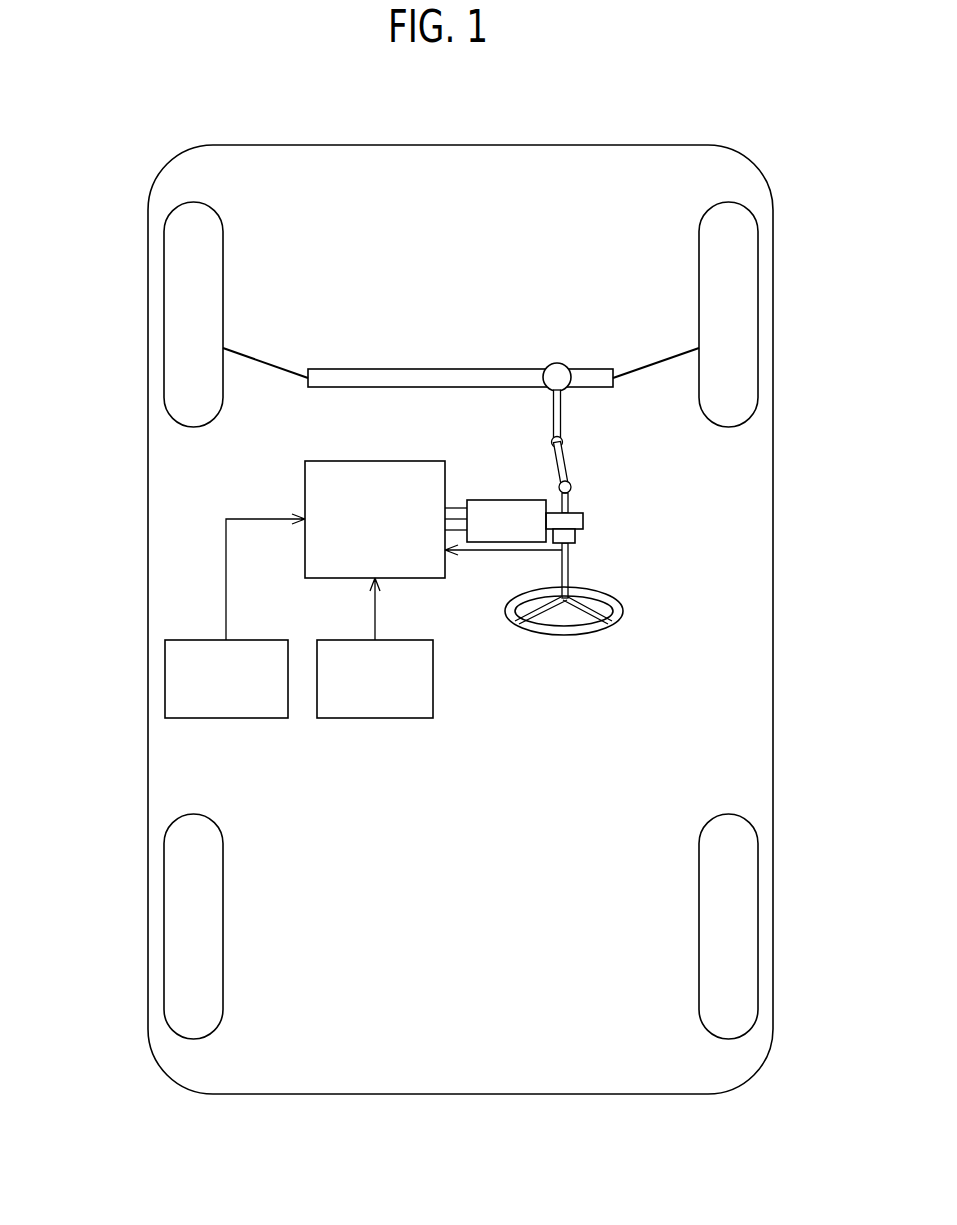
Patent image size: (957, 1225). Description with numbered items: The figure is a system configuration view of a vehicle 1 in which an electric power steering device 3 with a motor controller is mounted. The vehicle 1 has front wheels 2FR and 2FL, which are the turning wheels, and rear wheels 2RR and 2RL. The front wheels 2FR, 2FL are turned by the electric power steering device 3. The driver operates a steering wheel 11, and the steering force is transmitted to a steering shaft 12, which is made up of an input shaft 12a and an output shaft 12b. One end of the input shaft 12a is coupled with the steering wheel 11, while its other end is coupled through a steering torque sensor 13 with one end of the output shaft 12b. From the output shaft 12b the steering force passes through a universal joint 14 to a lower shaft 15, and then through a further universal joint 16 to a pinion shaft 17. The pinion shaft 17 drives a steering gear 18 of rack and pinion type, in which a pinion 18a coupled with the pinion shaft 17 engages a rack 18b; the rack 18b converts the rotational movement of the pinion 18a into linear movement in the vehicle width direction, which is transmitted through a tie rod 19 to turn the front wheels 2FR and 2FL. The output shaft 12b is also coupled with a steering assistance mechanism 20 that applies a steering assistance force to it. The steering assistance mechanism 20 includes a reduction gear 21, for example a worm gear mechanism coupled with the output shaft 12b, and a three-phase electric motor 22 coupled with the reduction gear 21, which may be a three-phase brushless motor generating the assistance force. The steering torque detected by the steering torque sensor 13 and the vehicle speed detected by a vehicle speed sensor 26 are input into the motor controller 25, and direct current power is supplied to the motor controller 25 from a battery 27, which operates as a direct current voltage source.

The vehicle 1 is at (773, 606).
The front wheel 2FL is at (178, 288).
The front wheel 2FR is at (743, 300).
The rear wheel 2RL is at (178, 902).
The rear wheel 2RR is at (743, 912).
The electric power steering device 3 is at (503, 642).
The steering wheel 11 is at (561, 640).
The steering shaft 12 is at (572, 547).
The input shaft 12a is at (571, 566).
The output shaft 12b is at (571, 496).
The steering torque sensor 13 is at (578, 538).
The universal joint 14 is at (558, 488).
The lower shaft 15 is at (568, 463).
The universal joint 16 is at (551, 441).
The pinion shaft 17 is at (562, 409).
The steering gear 18 is at (460, 330).
The pinion 18a is at (566, 347).
The rack 18b is at (510, 371).
The tie rod 19 is at (283, 370).
The steering assistance mechanism 20 is at (578, 488).
The reduction gear 21 is at (585, 520).
The three-phase electric motor 22 is at (484, 500).
The motor controller 25 is at (312, 481).
The vehicle speed sensor 26 is at (378, 718).
The battery 27 is at (229, 718).